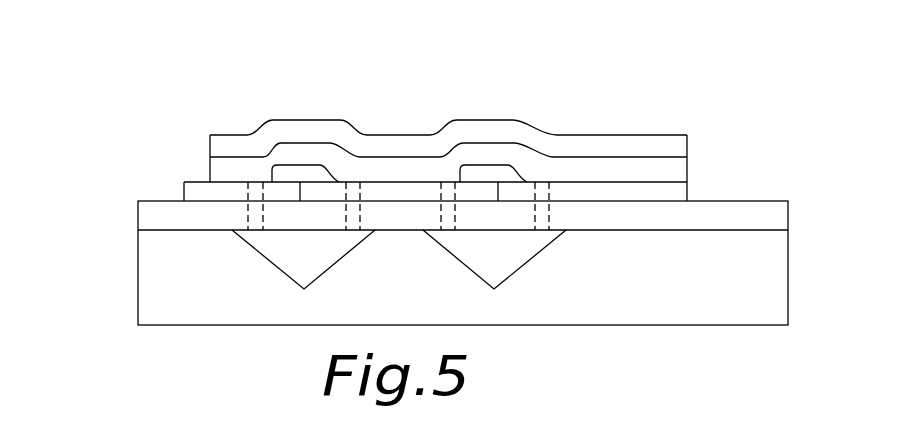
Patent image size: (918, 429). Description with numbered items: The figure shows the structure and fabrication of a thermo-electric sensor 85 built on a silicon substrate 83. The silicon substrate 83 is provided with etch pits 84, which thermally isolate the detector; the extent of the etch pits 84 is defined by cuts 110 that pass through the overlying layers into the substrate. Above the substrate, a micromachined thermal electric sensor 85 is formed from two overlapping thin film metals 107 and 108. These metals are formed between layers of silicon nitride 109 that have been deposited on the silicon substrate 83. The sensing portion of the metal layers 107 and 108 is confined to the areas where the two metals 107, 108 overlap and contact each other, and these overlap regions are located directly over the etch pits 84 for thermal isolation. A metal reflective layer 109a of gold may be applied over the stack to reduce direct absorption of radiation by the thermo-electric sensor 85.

The silicon substrate 83 is at (663, 262).
The etch pit 84 is at (510, 262).
The thermo-electric sensor 85 is at (497, 165).
The thin film metal 107 is at (200, 190).
The thin film metal 108 is at (395, 192).
The silicon nitride layer 109 is at (300, 162).
The metal reflective layer 109a is at (287, 120).
The cut 110 is at (258, 192).